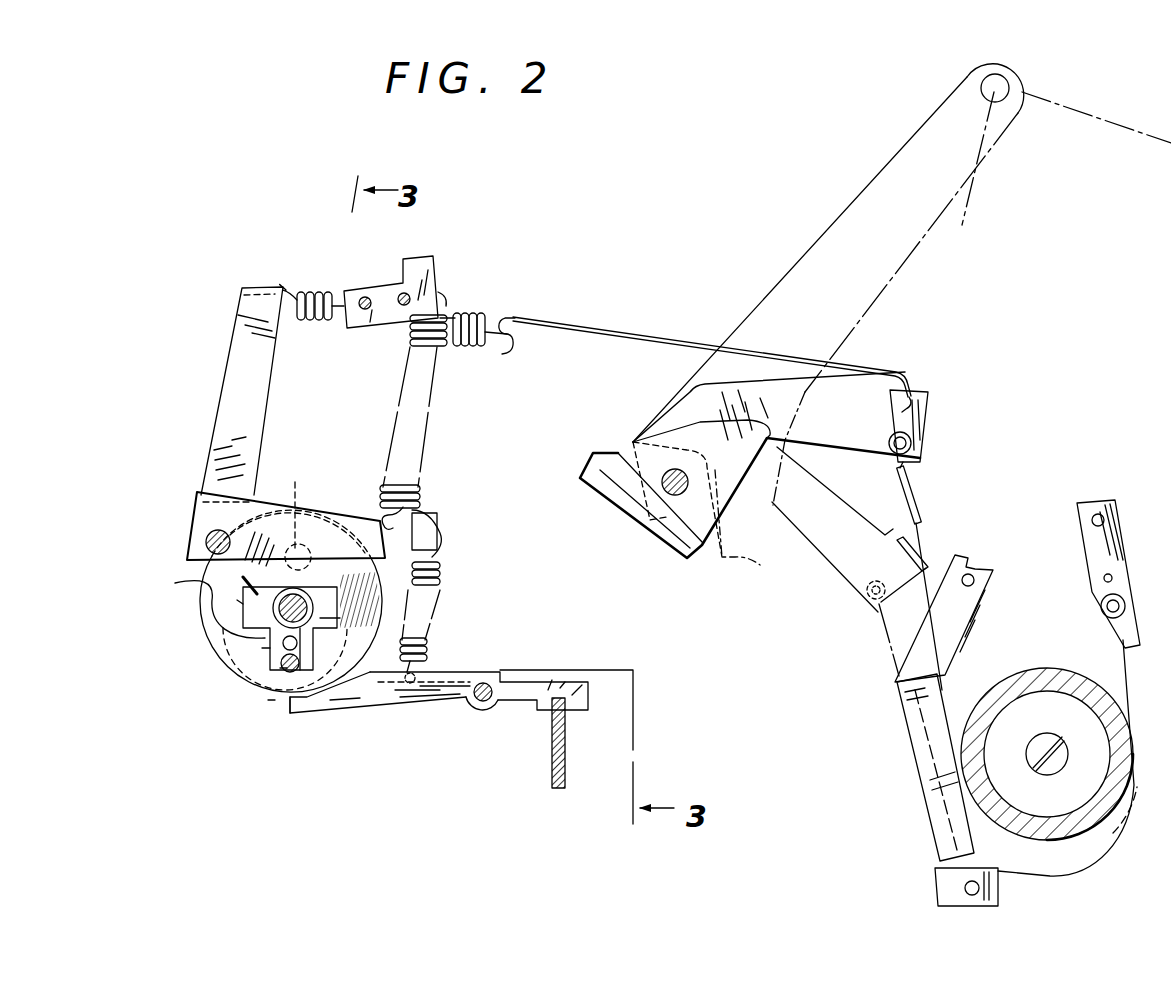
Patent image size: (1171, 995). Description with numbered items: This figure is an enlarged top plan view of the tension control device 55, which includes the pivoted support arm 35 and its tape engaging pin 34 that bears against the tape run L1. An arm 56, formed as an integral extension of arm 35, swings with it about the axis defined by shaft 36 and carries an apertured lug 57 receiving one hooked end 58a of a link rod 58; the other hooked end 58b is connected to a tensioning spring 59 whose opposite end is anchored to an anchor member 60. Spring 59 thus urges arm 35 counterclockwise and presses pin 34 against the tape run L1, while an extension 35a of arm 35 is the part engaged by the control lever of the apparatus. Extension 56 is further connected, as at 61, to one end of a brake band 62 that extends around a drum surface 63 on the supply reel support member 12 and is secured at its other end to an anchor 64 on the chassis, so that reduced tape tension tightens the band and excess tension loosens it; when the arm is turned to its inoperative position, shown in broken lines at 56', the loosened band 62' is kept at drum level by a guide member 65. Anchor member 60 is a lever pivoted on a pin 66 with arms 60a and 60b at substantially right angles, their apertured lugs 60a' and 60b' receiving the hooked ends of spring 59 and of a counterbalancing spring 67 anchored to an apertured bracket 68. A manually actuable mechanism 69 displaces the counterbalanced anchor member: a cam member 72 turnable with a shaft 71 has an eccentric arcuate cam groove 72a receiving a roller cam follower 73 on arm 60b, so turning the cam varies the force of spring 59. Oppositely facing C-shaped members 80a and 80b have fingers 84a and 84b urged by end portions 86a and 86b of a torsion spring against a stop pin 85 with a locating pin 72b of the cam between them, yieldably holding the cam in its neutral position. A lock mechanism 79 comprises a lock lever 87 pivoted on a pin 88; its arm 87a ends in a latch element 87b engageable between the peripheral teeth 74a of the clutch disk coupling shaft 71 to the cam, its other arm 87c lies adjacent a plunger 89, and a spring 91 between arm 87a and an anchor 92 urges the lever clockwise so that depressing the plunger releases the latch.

The supply reel support member 12 is at (1042, 688).
The tape engaging pin 34 is at (985, 80).
The support arm 35 is at (903, 257).
The extension of arm 35 35a is at (755, 563).
The shaft 36 is at (688, 468).
The tension control device 55 is at (659, 232).
The arm (extension of support arm) 56 is at (750, 492).
The inoperative position of extension 56 56' is at (866, 622).
The apertured lug 57 is at (930, 396).
The link rod 58 is at (644, 342).
The hooked end of link rod 58a is at (915, 388).
The hooked end of link rod 58b is at (513, 318).
The tensioning spring 59 is at (474, 312).
The anchor member 60 is at (203, 471).
The arm of anchor member 60a is at (227, 394).
The apertured lug 60a' is at (282, 287).
The arm of anchor member 60b is at (368, 499).
The apertured lug 60b' is at (406, 545).
The connection of brake band 61 is at (914, 447).
The brake band 62 is at (944, 576).
The loosened brake band 62' is at (1067, 771).
The drum surface (brake drum) 63 is at (1095, 690).
The anchor 64 is at (1085, 560).
The guide member 65 is at (917, 827).
The pivot pin 66 is at (207, 540).
The additional spring 67 is at (422, 495).
The apertured bracket (anchor) 68 is at (412, 262).
The manually actuable mechanism 69 is at (207, 650).
The shaft 71 is at (248, 590).
The cam member 72 is at (283, 648).
The arcuate cam groove 72a is at (210, 584).
The locating pin 72b is at (287, 670).
The cam follower 73 is at (292, 504).
The peripheral teeth of clutch disk 74a is at (272, 700).
The lock mechanism 79 is at (412, 700).
The C-shaped member 80a is at (246, 648).
The C-shaped member 80b is at (322, 622).
The finger 84a is at (270, 650).
The finger 84b is at (312, 645).
The stop pin 85 is at (286, 710).
The end portion of torsion spring 86a is at (273, 613).
The end portion of torsion spring 86b is at (318, 552).
The lock lever 87 is at (450, 690).
The arm of lock lever 87a is at (353, 710).
The latch element 87b is at (283, 713).
The arm of lock lever 87c is at (548, 687).
The pivot pin 88 is at (484, 682).
The plunger 89 is at (552, 753).
The spring 91 is at (442, 578).
The anchor 92 is at (440, 520).
The tape run L1 is at (963, 206).